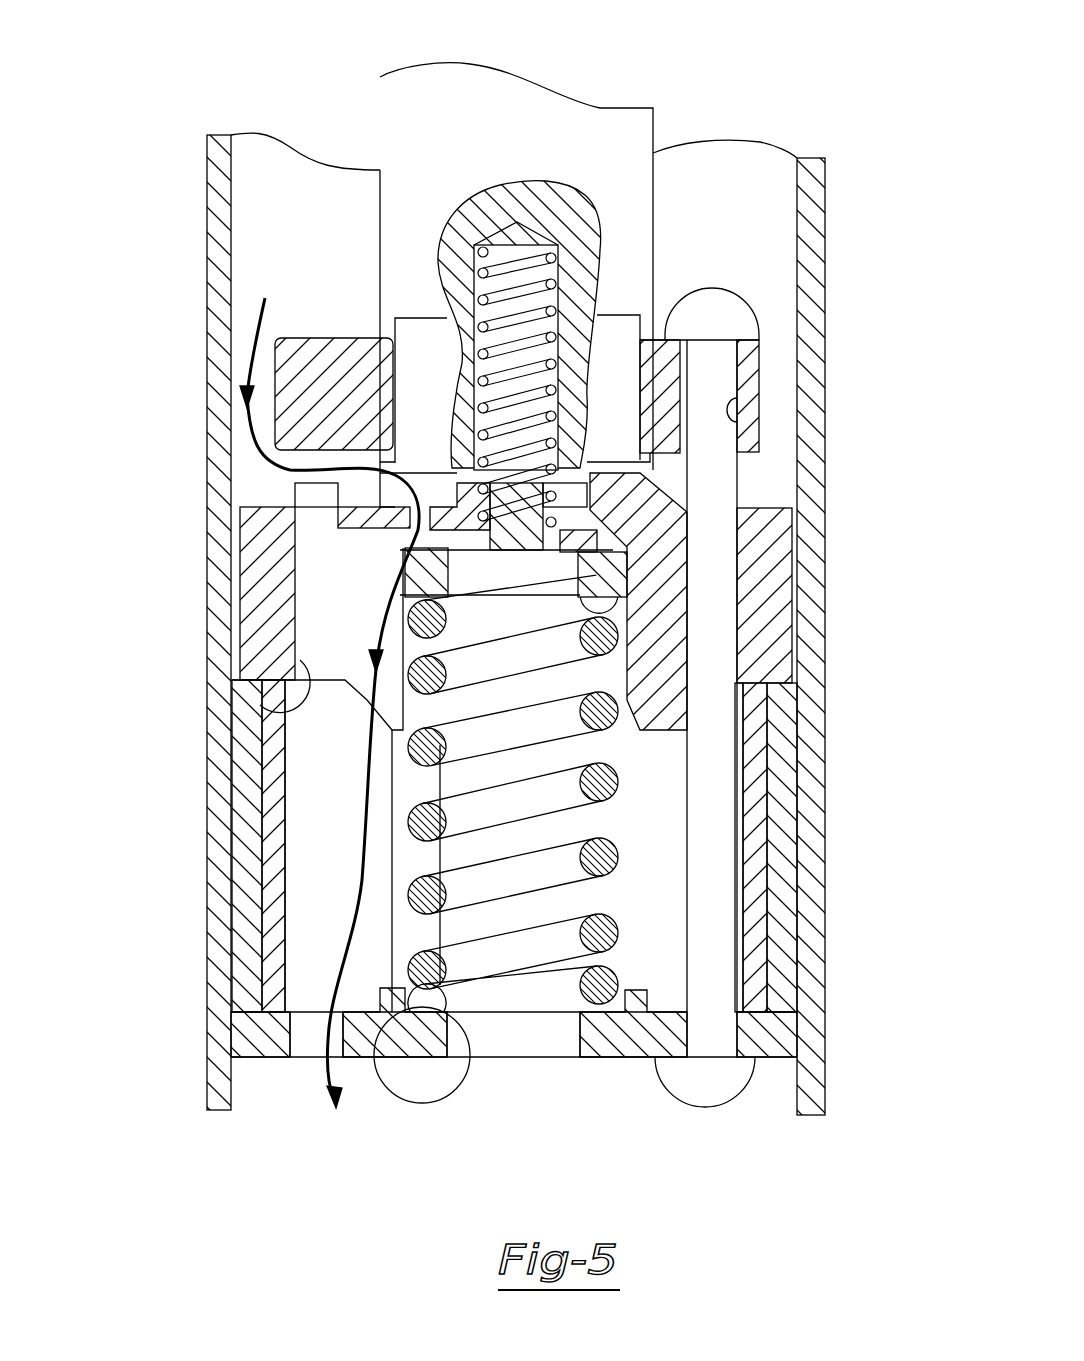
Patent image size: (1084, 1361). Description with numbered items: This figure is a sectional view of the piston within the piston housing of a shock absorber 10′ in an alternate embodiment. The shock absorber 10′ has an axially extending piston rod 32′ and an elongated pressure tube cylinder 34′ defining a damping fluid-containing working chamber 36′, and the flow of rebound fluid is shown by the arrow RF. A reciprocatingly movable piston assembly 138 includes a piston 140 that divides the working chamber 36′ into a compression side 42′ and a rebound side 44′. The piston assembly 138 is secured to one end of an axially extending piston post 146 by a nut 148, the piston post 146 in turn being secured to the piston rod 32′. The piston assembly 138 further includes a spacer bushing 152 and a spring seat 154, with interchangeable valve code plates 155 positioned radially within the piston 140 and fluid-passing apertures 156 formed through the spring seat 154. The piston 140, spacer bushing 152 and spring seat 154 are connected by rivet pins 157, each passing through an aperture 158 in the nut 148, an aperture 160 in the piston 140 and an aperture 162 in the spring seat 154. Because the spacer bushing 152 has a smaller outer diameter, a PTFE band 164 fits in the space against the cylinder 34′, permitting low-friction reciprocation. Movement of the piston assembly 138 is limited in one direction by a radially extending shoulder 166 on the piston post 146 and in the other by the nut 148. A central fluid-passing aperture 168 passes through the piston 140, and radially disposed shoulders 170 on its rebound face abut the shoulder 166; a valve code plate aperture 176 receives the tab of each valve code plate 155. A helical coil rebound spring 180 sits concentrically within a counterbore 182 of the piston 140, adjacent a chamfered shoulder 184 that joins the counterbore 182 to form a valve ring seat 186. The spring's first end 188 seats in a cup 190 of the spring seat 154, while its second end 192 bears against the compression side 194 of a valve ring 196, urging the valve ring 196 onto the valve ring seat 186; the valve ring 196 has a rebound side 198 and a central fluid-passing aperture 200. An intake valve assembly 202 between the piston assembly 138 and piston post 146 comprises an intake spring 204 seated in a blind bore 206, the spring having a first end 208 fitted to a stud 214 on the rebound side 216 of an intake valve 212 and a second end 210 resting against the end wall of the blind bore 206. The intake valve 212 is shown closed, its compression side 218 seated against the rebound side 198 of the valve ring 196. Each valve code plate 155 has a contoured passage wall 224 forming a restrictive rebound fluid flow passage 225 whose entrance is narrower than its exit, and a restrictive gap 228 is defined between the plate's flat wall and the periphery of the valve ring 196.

The shock absorber 10′ is at (176, 286).
The piston rod 32′ is at (438, 88).
The pressure tube cylinder 34′ is at (805, 897).
The working chamber 36′ is at (768, 165).
The compression side 42′ is at (788, 1102).
The rebound side 44′ is at (318, 173).
The piston assembly 138 is at (762, 246).
The piston 140 is at (250, 660).
The piston post 146 is at (682, 510).
The nut 148 is at (742, 356).
The spacer bushing 152 is at (270, 805).
The spring seat 154 is at (240, 1052).
The valve code plate 155 is at (303, 603).
The fluid-passing apertures 156 is at (300, 1062).
The rivet pins 157 is at (713, 792).
The aperture 158 is at (737, 412).
The aperture 160 is at (732, 600).
The aperture 162 is at (705, 1085).
The PTFE band 164 is at (242, 862).
The radially extending shoulder 166 is at (400, 462).
The central fluid-passing aperture 168 is at (695, 745).
The shoulders 170 is at (600, 520).
The valve code plate aperture 176 is at (270, 702).
The helical coil rebound spring 180 is at (275, 905).
The counterbore 182 is at (752, 760).
The chamfered shoulder 184 is at (700, 700).
The valve ring seat 186 is at (580, 552).
The first end 188 is at (462, 1060).
The cup 190 is at (388, 1000).
The second end 192 is at (440, 652).
The compression side 194 is at (575, 606).
The valve ring 196 is at (360, 522).
The rebound side 198 is at (462, 540).
The fluid-passing aperture 200 is at (405, 553).
The intake valve assembly 202 is at (560, 300).
The intake spring 204 is at (680, 248).
The blind bore 206 is at (680, 248).
The first end 208 is at (645, 540).
The second end 210 is at (570, 320).
The intake valve 212 is at (430, 480).
The stud 214 is at (483, 472).
The rebound side 216 is at (398, 470).
The compression side 218 is at (340, 490).
The contoured passage wall 224 is at (372, 640).
The restrictive rebound fluid flow passage 225 is at (352, 690).
The restrictive gap 228 is at (405, 503).
The rebound fluid flow RF is at (360, 822).